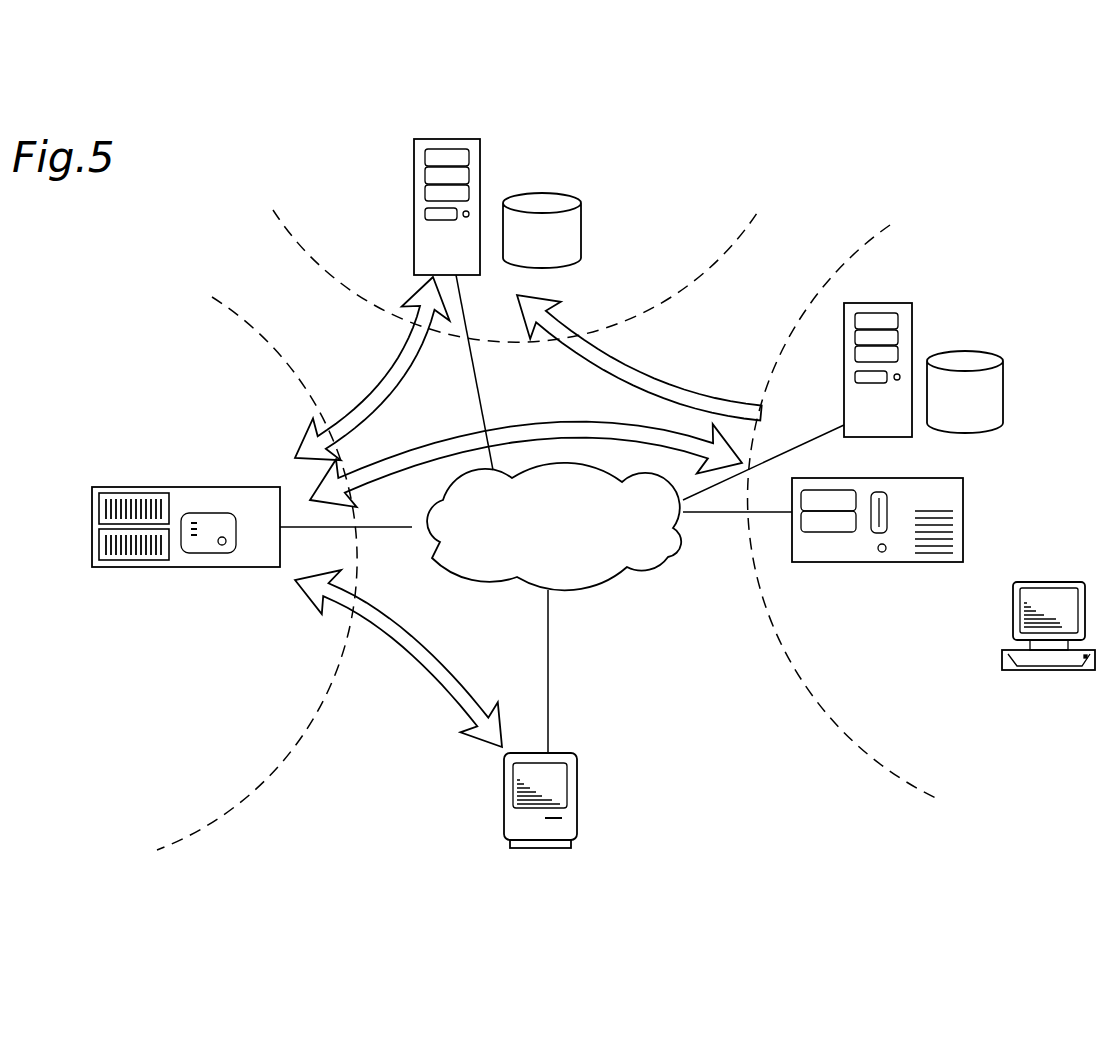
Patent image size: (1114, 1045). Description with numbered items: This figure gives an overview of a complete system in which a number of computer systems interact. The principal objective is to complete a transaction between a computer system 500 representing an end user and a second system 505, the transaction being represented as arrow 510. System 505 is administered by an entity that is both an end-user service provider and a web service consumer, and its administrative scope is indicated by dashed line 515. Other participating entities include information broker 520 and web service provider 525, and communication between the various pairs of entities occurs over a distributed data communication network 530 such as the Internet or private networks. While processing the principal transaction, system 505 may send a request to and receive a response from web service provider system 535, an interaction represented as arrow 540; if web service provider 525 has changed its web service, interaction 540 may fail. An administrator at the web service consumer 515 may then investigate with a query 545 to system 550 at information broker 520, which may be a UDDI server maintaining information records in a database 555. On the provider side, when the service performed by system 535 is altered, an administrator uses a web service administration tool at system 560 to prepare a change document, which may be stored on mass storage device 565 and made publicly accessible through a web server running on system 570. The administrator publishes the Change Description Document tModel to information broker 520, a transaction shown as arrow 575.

The computer system 500 is at (577, 828).
The second system 505 is at (137, 567).
The arrow representing the transaction 510 is at (448, 684).
The dashed line indicating administrative scope 515 is at (158, 850).
The information broker 520 is at (757, 213).
The web service provider 525 is at (940, 800).
The distributed data communication network 530 is at (484, 573).
The web service provider system 535 is at (904, 563).
The arrow representing interaction 540 is at (560, 425).
The query 545 is at (384, 372).
The system at information broker 550 is at (414, 242).
The database 555 is at (573, 258).
The system with web service administration tool 560 is at (1027, 670).
The mass storage device 565 is at (996, 420).
The system running resource server 570 is at (910, 322).
The arrow representing publication transaction 575 is at (660, 376).